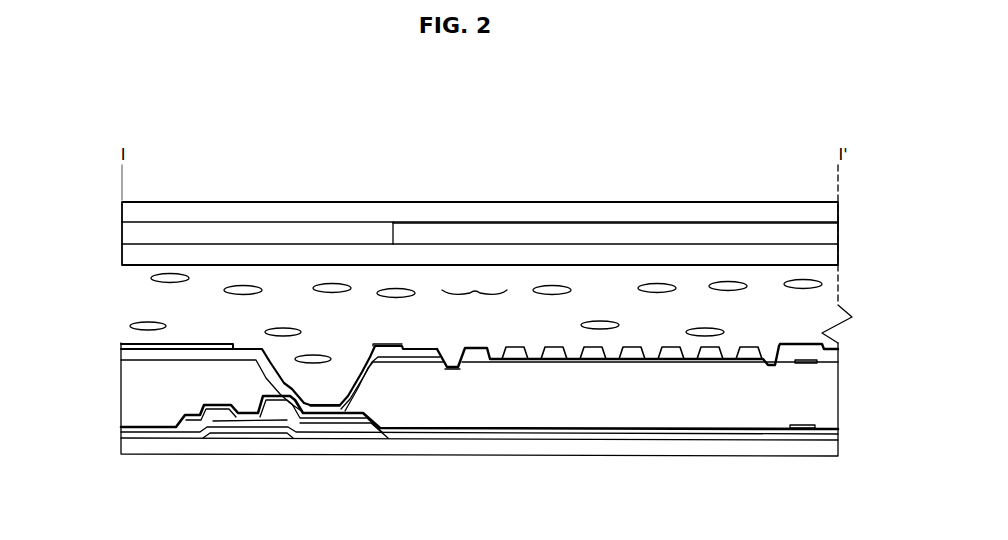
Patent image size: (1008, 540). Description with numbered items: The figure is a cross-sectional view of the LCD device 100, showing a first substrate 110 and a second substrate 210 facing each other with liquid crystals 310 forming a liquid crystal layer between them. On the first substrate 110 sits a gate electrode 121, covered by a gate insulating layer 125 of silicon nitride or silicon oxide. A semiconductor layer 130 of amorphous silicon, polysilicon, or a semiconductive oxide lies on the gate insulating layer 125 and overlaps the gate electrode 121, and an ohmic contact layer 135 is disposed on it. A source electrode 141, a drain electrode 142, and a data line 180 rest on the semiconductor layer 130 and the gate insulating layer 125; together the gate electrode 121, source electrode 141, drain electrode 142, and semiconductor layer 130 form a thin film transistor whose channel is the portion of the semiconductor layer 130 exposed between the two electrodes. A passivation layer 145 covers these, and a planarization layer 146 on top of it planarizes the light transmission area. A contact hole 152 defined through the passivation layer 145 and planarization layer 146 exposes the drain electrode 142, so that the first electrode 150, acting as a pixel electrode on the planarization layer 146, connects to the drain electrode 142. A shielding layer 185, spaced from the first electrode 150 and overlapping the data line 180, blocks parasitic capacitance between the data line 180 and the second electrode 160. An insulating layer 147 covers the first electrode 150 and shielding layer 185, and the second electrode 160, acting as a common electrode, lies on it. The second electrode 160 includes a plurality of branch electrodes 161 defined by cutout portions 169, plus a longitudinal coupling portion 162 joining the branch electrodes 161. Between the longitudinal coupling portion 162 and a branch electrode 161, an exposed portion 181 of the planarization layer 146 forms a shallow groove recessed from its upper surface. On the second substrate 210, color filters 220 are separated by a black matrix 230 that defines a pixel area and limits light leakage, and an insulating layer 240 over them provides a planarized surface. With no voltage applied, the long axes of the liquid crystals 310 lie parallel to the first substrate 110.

The LCD device 100 is at (90, 124).
The first substrate 110 is at (143, 445).
The gate electrode 121 is at (233, 433).
The gate insulating layer 125 is at (265, 428).
The semiconductor layer 130 is at (343, 428).
The ohmic contact layer 135 is at (193, 427).
The source electrode 141 is at (200, 414).
The drain electrode 142 is at (313, 420).
The passivation layer 145 is at (178, 419).
The planarization layer 146 is at (132, 398).
The insulating layer 147 is at (133, 355).
The first electrode 150 is at (358, 392).
The contact hole 152 is at (323, 403).
The second electrode 160 is at (132, 345).
The branch electrodes 161 is at (553, 347).
The longitudinal coupling portion 162 is at (455, 355).
The cutout portions 169 is at (653, 355).
The data line 180 is at (802, 429).
The exposed portion 181 is at (446, 343).
The shielding layer 185 is at (793, 364).
The second substrate 210 is at (423, 212).
The color filters 220 is at (477, 230).
The black matrix 230 is at (292, 232).
The insulating layer 240 is at (585, 253).
The liquid crystals 310 is at (730, 284).